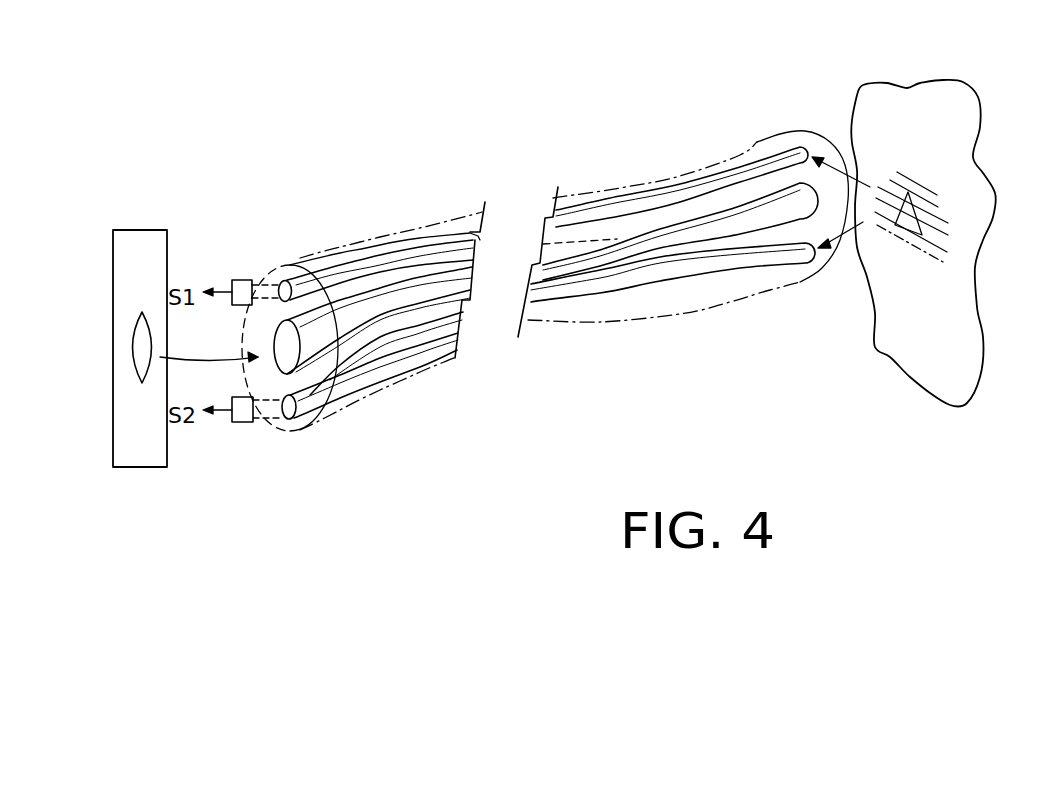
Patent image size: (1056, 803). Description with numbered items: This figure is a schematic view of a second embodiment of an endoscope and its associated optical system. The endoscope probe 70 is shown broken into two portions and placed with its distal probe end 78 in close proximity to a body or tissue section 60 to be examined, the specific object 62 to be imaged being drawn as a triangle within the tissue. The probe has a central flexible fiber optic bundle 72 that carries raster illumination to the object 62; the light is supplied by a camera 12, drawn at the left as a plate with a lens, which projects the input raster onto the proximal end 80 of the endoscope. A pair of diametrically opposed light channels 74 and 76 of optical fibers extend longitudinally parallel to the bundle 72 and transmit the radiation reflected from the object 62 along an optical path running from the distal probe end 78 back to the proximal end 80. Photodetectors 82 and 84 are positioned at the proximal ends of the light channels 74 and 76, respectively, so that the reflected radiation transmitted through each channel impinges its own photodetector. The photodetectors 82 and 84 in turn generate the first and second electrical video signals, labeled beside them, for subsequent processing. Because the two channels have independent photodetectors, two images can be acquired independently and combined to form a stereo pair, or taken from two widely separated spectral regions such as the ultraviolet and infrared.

The camera 12 is at (185, 322).
The photodetector 82 is at (252, 280).
The photodetector 84 is at (247, 422).
The proximal end 80 is at (298, 422).
The endoscope probe 70 is at (568, 102).
The light channel 74 is at (740, 170).
The central flexible fiber optic bundle 72 is at (677, 245).
The light channel 76 is at (772, 263).
The distal probe end 78 is at (850, 160).
The body or tissue section 60 is at (953, 373).
The object 62 is at (913, 212).